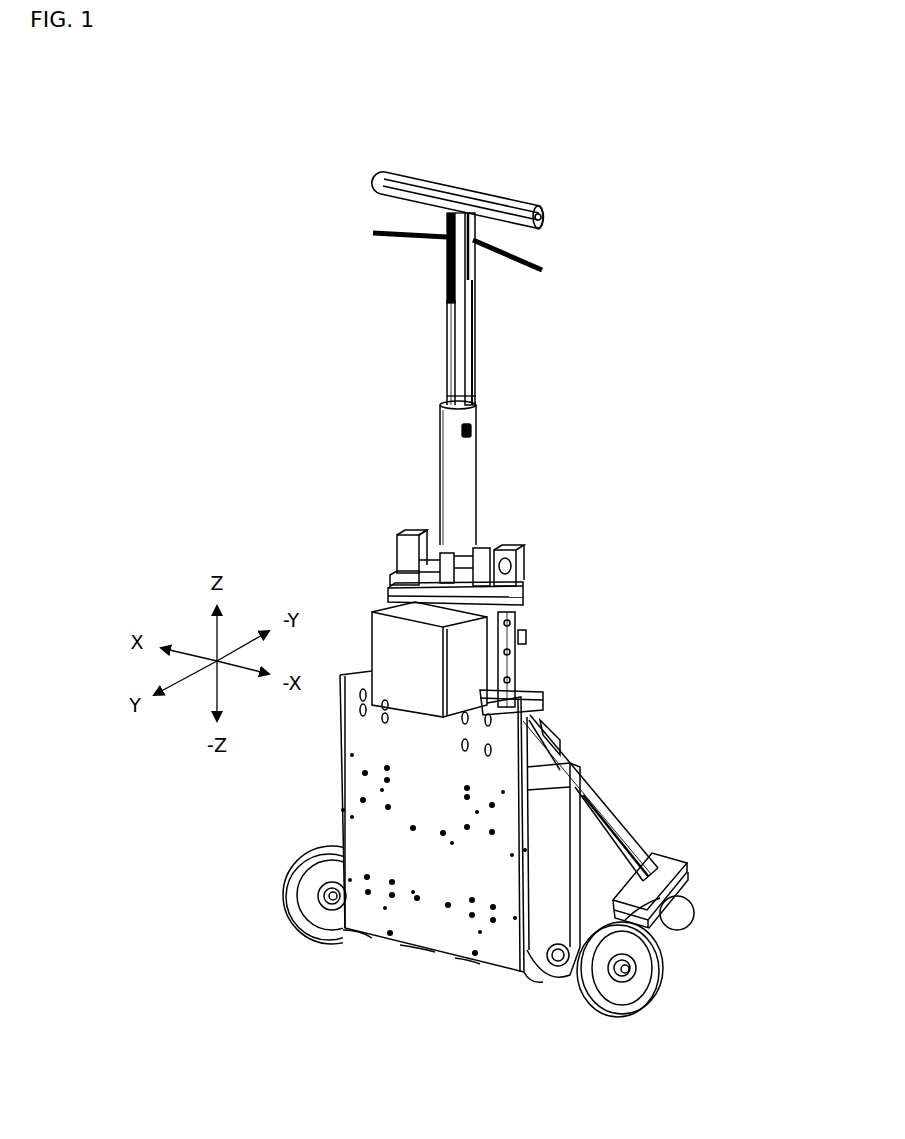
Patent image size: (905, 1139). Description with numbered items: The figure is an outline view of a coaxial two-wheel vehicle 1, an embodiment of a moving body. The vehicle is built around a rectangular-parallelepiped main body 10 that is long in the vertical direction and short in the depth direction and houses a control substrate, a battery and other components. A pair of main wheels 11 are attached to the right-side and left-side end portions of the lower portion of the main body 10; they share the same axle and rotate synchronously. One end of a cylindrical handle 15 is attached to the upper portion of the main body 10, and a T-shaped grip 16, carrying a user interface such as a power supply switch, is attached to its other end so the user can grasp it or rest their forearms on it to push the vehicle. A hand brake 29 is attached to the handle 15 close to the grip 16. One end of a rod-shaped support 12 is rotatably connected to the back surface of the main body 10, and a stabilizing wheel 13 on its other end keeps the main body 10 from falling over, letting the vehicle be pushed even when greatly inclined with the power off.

The coaxial two-wheel vehicle 1 is at (744, 160).
The main body 10 is at (556, 570).
The main wheels 11 is at (314, 942).
The support 12 is at (606, 802).
The stabilizing wheel 13 is at (691, 906).
The handle 15 is at (476, 382).
The grip 16 is at (474, 196).
The hand brake 29 is at (502, 255).